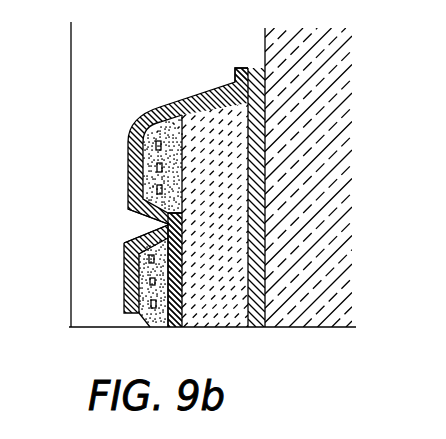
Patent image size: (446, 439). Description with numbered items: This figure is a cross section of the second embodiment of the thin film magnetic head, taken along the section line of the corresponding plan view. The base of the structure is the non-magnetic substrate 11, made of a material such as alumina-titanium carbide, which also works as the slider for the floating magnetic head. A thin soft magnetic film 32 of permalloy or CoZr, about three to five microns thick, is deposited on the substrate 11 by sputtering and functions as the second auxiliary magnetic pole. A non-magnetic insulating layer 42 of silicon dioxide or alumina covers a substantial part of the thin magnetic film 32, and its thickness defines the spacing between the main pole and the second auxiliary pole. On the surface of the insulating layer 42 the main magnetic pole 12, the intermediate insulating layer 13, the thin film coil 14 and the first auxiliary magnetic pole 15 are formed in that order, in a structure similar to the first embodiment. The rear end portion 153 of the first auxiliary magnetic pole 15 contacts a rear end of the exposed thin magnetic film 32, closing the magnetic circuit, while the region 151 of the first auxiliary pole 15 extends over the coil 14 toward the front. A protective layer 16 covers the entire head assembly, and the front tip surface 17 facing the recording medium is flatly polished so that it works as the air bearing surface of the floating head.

The substrate 11 is at (318, 139).
The main magnetic pole 12 is at (168, 289).
The intermediate insulating layer 13 is at (150, 204).
The thin film coil 14 is at (150, 261).
The first auxiliary magnetic pole 15 is at (129, 162).
The protective layer 16 is at (82, 50).
The front tip surface 17 is at (295, 327).
The thin soft magnetic film 32 is at (260, 210).
The non-magnetic insulating layer 42 is at (216, 290).
The junction 151 is at (158, 220).
The rear end portion 153 is at (235, 69).